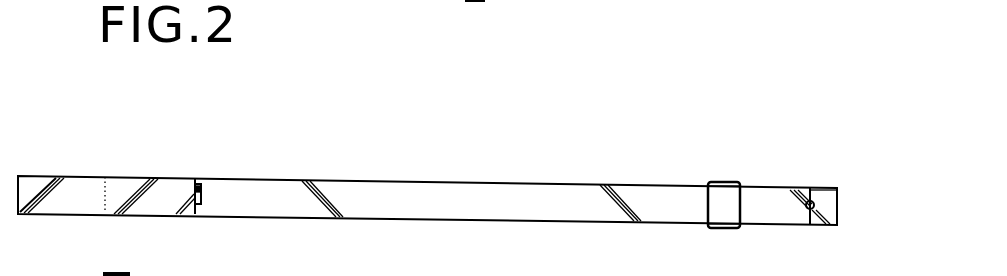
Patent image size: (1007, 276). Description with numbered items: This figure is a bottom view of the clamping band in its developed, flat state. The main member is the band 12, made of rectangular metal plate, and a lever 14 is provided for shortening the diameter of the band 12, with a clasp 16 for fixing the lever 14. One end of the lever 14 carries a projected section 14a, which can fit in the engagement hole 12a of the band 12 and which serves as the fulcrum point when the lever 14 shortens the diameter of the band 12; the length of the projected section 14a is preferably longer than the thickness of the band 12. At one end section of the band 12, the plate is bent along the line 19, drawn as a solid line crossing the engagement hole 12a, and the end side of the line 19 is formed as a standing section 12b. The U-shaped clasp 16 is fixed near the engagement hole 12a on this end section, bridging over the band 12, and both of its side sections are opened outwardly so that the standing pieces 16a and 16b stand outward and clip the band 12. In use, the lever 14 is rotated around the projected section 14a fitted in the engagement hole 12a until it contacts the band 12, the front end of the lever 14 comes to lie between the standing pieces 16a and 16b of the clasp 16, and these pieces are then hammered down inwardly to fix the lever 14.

The band 12 is at (455, 188).
The engagement hole 12a is at (792, 182).
The standing section 12b is at (876, 172).
The lever 14 is at (72, 176).
The projected section 14a is at (216, 176).
The clasp 16 is at (715, 190).
The standing piece 16a is at (720, 228).
The standing piece 16b is at (723, 182).
The line 19 is at (818, 225).